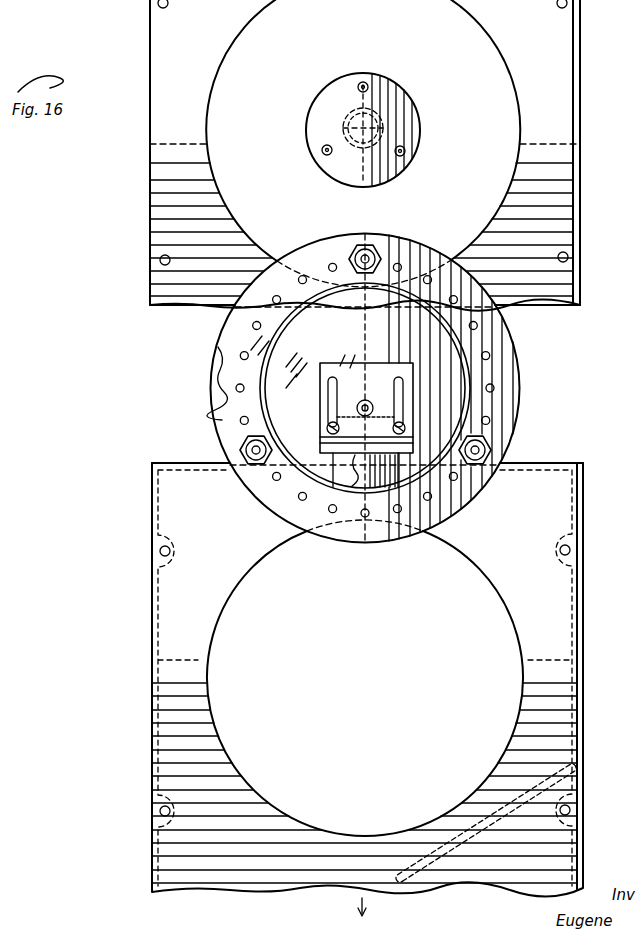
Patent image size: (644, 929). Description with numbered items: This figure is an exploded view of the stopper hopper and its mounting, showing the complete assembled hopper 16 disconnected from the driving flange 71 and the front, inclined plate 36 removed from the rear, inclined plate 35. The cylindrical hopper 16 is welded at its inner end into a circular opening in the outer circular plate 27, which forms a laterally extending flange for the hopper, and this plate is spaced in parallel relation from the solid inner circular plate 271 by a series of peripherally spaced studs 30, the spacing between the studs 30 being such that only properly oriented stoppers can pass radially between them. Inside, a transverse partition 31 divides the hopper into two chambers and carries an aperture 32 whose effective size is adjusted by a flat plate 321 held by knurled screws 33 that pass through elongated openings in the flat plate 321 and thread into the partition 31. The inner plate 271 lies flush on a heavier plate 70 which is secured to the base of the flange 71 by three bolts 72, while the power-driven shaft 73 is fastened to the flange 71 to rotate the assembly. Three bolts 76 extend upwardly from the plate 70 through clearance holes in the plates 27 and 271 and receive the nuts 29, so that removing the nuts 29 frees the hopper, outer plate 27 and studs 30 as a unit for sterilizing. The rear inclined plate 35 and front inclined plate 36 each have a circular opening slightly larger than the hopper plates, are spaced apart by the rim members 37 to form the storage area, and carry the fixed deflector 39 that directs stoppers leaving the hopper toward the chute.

The hopper 16 is at (463, 357).
The outer circular plate 27 is at (228, 440).
The inner circular plate 271 is at (228, 406).
The nuts 29 is at (364, 249).
The studs 30 is at (490, 420).
The transverse partition 31 is at (300, 317).
The aperture 32 is at (325, 480).
The flat plate 321 is at (353, 373).
The knurled screws 33 is at (397, 420).
The rear inclined plate 35 is at (579, 125).
The front inclined plate 36 is at (561, 527).
The rim members 37 is at (158, 661).
The fixed deflector 39 is at (577, 762).
The heavier plate 70 is at (222, 396).
The flange 71 is at (313, 142).
The bolts 72 is at (364, 82).
The power-driven shaft 73 is at (352, 150).
The bolts 76 is at (373, 254).